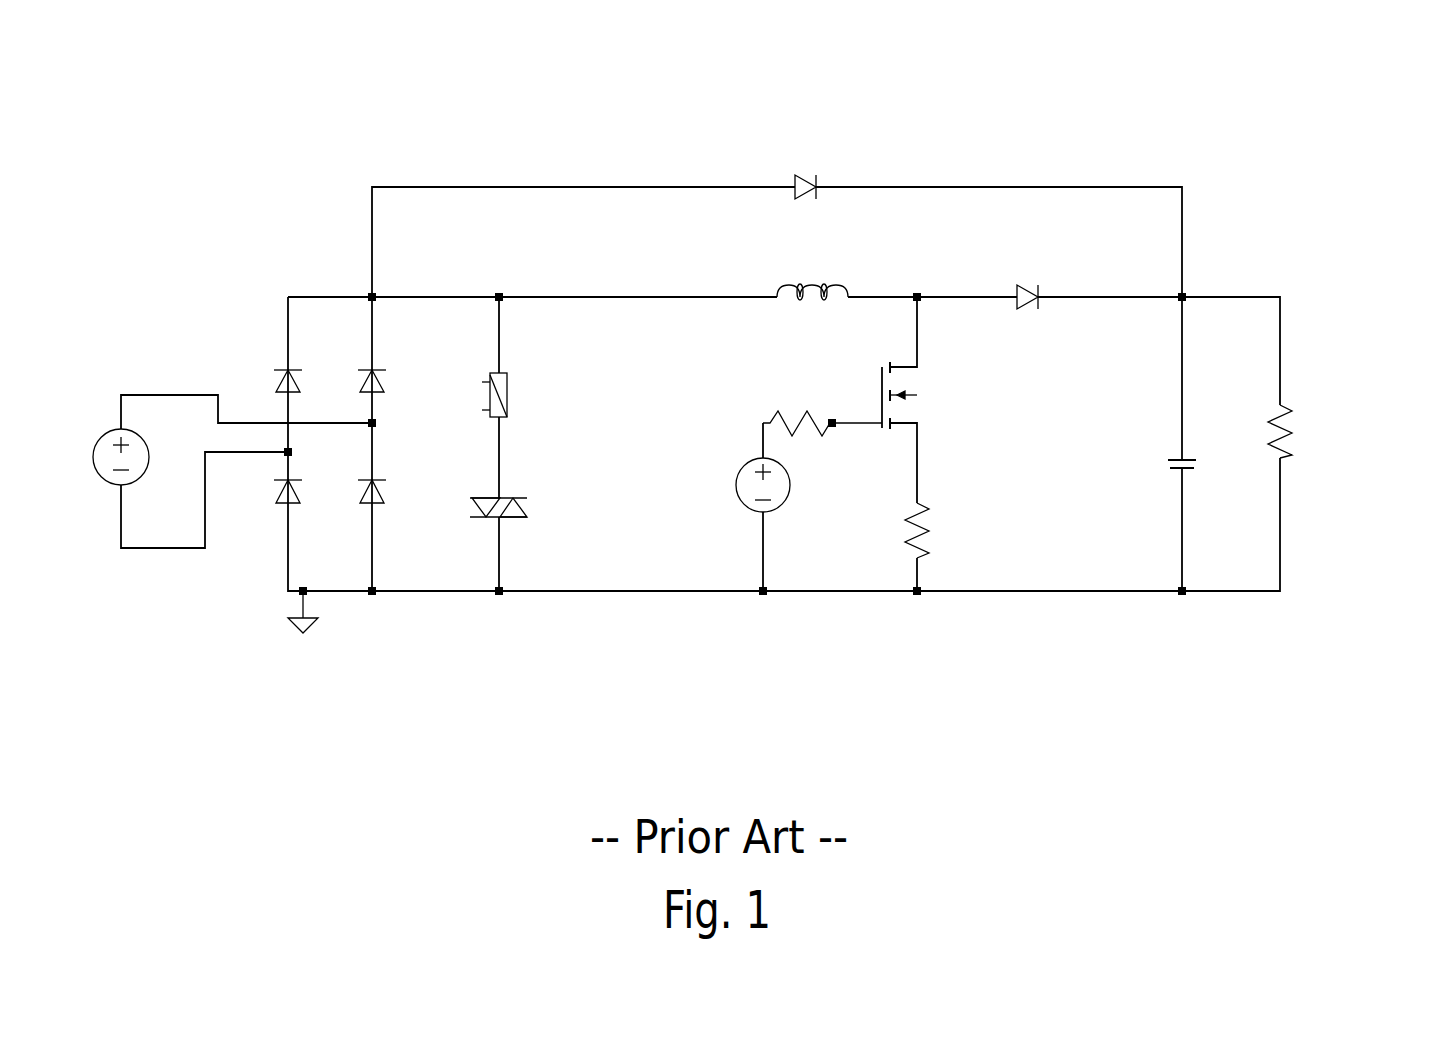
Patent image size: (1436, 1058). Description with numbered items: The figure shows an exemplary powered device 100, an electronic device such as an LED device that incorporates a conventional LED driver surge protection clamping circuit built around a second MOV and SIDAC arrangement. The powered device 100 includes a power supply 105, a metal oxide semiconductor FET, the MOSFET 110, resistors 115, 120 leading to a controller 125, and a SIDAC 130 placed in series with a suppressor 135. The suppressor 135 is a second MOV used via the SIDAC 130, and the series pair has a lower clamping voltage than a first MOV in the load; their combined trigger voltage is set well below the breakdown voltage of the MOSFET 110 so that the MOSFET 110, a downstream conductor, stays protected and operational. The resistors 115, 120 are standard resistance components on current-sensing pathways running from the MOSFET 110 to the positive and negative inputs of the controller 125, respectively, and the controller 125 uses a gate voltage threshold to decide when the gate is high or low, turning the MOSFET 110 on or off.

The powered device 100 is at (1358, 38).
The power supply 105 is at (158, 395).
The metal oxide semiconductor FET (MOSFET) 110 is at (952, 383).
The resistor 115 is at (768, 400).
The resistor 120 is at (955, 517).
The controller 125 is at (755, 513).
The SIDAC 130 is at (528, 550).
The suppressor 135 is at (522, 360).